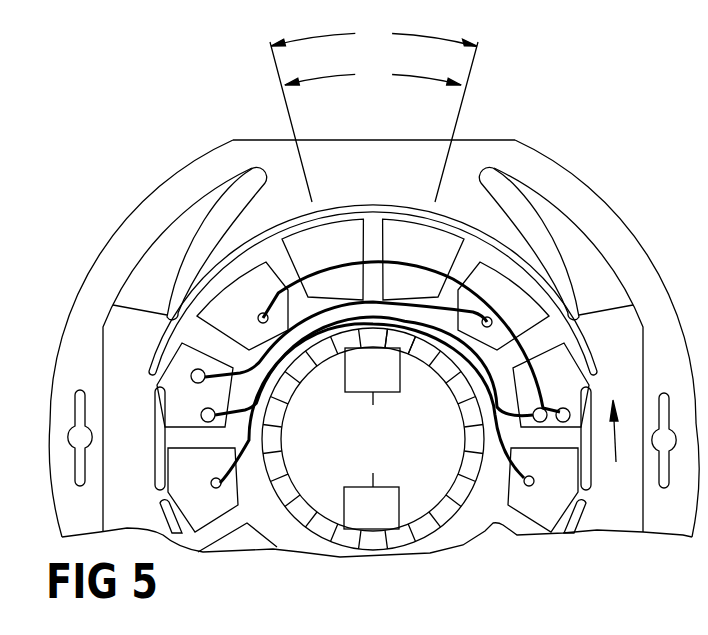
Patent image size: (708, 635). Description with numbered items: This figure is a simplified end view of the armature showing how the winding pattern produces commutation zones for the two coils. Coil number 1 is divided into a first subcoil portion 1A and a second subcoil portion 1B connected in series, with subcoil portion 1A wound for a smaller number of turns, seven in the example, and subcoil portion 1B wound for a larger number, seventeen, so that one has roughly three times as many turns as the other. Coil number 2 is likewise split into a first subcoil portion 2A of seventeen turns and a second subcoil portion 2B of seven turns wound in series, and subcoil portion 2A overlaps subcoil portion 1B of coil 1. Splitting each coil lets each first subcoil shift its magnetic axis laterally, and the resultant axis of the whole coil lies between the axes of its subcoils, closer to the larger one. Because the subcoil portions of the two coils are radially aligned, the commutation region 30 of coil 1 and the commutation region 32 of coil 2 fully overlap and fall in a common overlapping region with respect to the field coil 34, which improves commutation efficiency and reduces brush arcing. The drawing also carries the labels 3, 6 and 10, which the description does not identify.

The coil number 1 is at (365, 369).
The coil number 2 is at (373, 439).
The phase 3 pole 3 is at (400, 341).
The direction of rotation 6 is at (612, 418).
The stepper motor assembly 10 is at (150, 355).
The commutation region 30 is at (373, 74).
The commutation region 32 is at (374, 113).
The field coil 34 is at (167, 258).
The first subcoil portion 1A is at (354, 405).
The second subcoil portion 1B is at (359, 362).
The first subcoil portion 2A is at (372, 371).
The second subcoil portion 2B is at (395, 377).